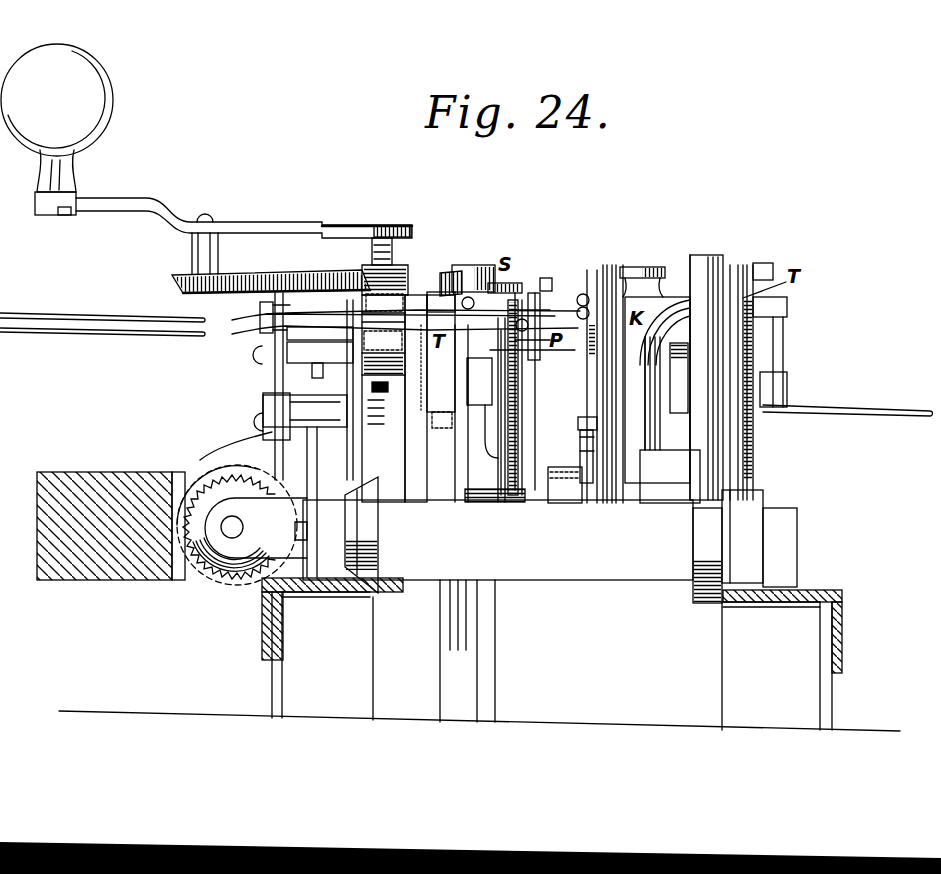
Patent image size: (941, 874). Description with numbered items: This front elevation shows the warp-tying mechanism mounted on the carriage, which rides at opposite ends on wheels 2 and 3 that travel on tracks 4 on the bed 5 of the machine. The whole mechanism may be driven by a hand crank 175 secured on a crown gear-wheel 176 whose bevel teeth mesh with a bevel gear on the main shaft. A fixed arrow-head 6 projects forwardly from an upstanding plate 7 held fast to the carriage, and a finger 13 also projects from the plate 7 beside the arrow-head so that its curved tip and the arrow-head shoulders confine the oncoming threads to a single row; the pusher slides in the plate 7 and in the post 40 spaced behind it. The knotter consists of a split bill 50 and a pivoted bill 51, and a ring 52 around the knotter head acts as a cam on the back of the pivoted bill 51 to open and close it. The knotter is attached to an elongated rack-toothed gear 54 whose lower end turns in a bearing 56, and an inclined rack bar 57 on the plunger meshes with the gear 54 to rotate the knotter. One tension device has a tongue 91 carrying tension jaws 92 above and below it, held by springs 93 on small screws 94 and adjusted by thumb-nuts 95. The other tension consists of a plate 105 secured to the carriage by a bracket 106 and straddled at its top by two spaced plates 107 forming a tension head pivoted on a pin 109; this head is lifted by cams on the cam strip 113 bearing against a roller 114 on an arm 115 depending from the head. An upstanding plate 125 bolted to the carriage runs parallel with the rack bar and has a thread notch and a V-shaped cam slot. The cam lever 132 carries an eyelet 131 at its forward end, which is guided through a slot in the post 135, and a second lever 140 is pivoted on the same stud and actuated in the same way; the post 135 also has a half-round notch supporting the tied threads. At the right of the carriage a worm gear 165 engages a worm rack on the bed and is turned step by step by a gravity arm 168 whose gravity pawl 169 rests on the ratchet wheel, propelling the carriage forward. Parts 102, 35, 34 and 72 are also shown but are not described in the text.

The hand crank 175 is at (90, 90).
The crown gear-wheel 176 is at (357, 210).
The thumb-nuts 95 is at (366, 262).
The small screws 94 is at (398, 250).
The springs 93 is at (384, 303).
The tension jaws 92 is at (383, 341).
The tongue 91 is at (367, 322).
The bar 102 is at (352, 360).
The step piece 35 is at (492, 376).
The column 34 is at (465, 418).
The post 40 is at (508, 287).
The fixed arrow-head 6 is at (544, 283).
The finger 13 is at (462, 354).
The upstanding plate 7 is at (506, 395).
The arm 115 is at (540, 346).
The bracket 72 is at (508, 304).
The pin 109 is at (581, 288).
The spaced plates 107 is at (607, 272).
The roller 114 is at (587, 425).
The plate 105 is at (590, 441).
The bracket 106 is at (603, 455).
The cam strip 113 is at (580, 478).
The ring 52 is at (623, 384).
The pivoted bill 51 is at (655, 303).
The rack bar 57 is at (682, 414).
The bearing 56 is at (657, 482).
The split bill 50 is at (676, 298).
The post 135 is at (743, 263).
The eyelet 131 is at (747, 305).
The cam lever 132 is at (763, 320).
The upstanding plate 125 is at (717, 352).
The elongated rack-toothed gear 54 is at (660, 378).
The lever 140 is at (787, 398).
The wheel 3 is at (367, 530).
The wheel 2 is at (735, 539).
The tracks 4 is at (358, 590).
The bed 5 is at (823, 701).
The worm gear 165 is at (200, 583).
The gravity arm 168 is at (262, 444).
The gravity pawl 169 is at (240, 592).